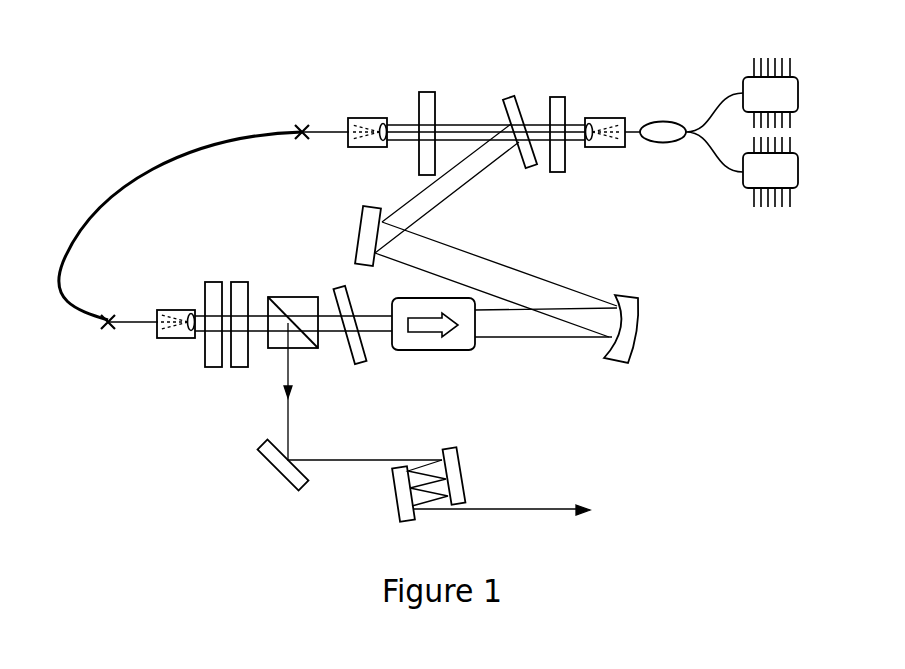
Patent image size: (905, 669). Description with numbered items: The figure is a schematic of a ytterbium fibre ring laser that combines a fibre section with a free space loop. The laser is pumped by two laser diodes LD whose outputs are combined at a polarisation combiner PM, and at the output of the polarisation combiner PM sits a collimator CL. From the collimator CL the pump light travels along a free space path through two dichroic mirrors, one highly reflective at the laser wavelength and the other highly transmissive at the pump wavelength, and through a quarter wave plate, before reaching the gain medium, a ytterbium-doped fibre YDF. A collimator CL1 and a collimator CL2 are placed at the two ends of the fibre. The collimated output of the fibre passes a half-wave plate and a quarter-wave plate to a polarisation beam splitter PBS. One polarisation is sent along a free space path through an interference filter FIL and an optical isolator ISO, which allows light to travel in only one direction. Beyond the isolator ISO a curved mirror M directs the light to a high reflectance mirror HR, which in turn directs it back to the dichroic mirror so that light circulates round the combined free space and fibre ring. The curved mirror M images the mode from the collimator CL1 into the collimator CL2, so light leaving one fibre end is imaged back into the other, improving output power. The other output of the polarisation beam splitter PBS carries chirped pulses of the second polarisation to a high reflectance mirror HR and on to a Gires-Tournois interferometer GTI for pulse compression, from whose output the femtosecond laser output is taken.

The ytterbium-doped fibre YDF is at (184, 227).
The first collimator CL1 is at (176, 312).
The second collimator CL2 is at (367, 121).
The collimator CL is at (605, 149).
The polarisation combiner PM is at (691, 132).
The laser diodes LD is at (770, 132).
The high reflectance mirror HR is at (308, 338).
The curved mirror M is at (605, 313).
The polarisation beam splitter PBS is at (293, 309).
The interference filter FIL is at (349, 339).
The optical isolator ISO is at (433, 340).
The Gires-Tournois interferometer GTI is at (484, 490).